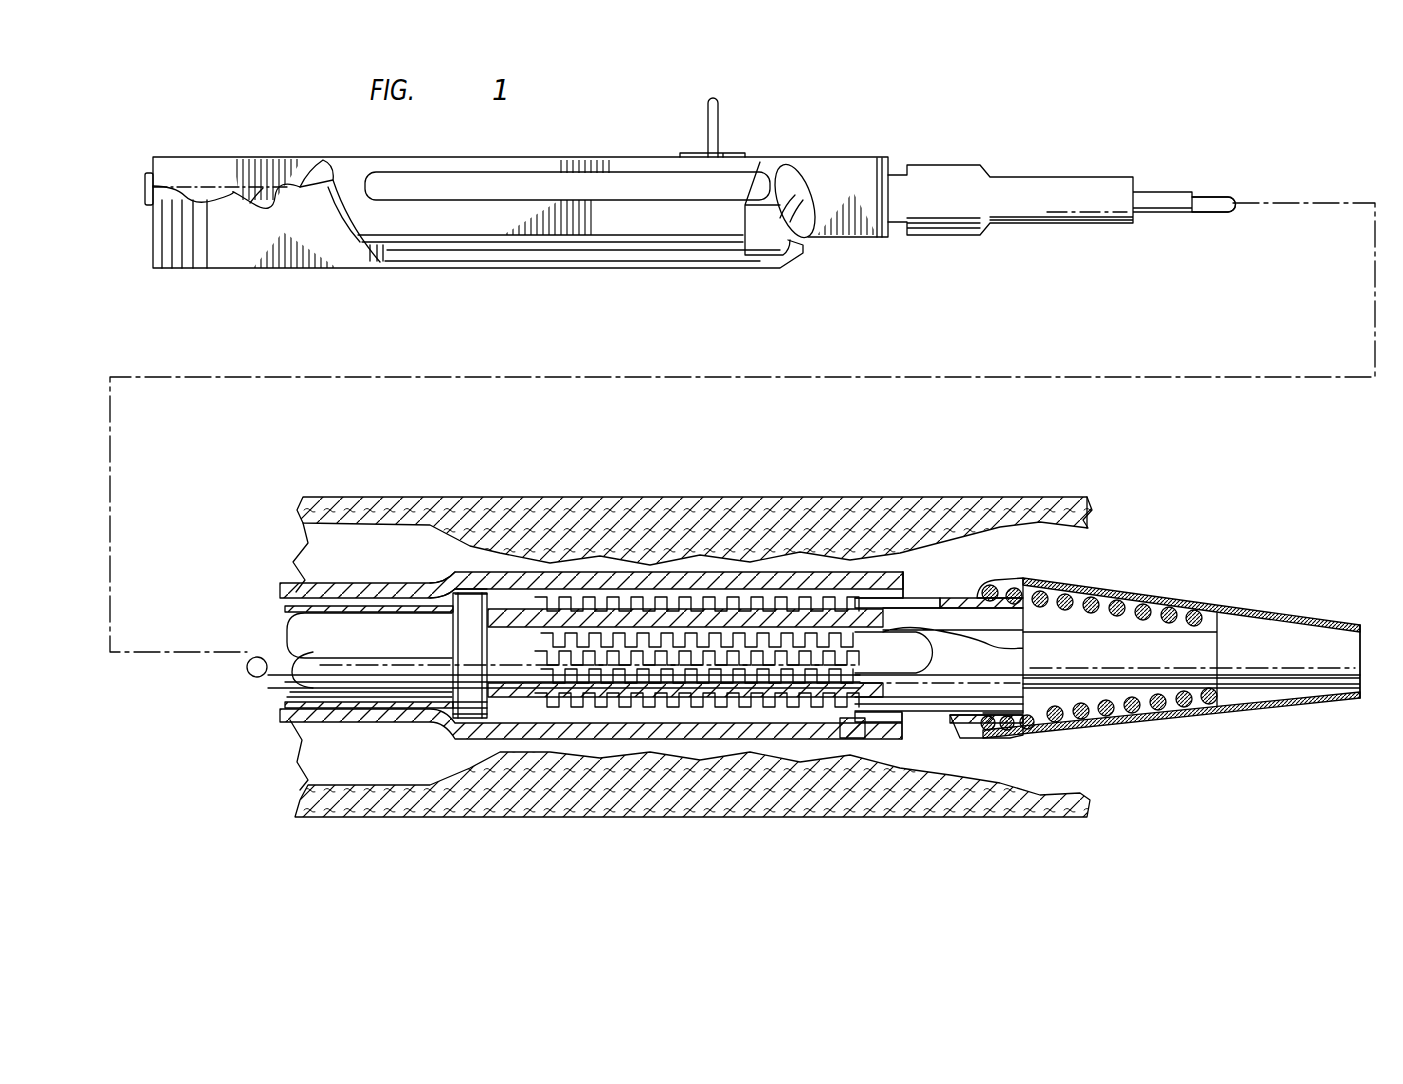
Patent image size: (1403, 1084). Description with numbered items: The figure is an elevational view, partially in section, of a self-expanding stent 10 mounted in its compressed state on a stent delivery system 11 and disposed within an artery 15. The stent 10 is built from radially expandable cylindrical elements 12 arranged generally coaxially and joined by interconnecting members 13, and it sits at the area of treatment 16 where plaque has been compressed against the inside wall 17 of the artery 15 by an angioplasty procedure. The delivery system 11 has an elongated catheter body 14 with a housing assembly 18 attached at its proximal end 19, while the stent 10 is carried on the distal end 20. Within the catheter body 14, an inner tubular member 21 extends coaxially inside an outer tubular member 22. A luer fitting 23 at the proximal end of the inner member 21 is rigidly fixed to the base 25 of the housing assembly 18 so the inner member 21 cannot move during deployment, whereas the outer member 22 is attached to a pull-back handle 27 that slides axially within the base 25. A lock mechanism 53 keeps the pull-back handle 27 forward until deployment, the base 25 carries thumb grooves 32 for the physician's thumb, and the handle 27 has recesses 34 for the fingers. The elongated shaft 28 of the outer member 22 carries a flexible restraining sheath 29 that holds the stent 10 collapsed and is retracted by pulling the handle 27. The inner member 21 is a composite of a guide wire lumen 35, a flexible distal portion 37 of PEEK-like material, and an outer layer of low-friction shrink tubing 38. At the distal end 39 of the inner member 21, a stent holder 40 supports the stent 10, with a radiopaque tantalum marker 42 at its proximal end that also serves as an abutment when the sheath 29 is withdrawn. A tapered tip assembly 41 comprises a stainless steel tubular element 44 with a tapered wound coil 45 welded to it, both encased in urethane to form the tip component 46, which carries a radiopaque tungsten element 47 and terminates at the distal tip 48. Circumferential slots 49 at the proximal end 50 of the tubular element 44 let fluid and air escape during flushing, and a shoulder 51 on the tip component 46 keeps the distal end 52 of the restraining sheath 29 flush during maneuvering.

The self-expanding stent 10 is at (524, 660).
The stent delivery system 11 is at (1030, 143).
The cylindrical elements 12 is at (632, 447).
The interconnecting members 13 is at (565, 707).
The catheter body 14 is at (218, 610).
The artery 15 is at (1037, 500).
The area of treatment 16 is at (513, 491).
The inside wall 17 is at (1090, 583).
The housing assembly 18 is at (575, 147).
The proximal end 19 is at (900, 200).
The distal end 20 is at (937, 742).
The inner tubular member 21 is at (313, 650).
The outer tubular member 22 is at (1215, 188).
The luer fitting 23 is at (143, 185).
The base 25 is at (153, 250).
The pull-back handle 27 is at (773, 173).
The elongated shaft 28 is at (293, 590).
The restraining sheath 29 is at (467, 573).
The thumb grooves 32 is at (262, 205).
The recesses 34 is at (800, 200).
The guide wire lumen 35 is at (247, 681).
The distal portion 37 is at (343, 681).
The shrink tubing 38 is at (402, 605).
The distal end 39 is at (975, 572).
The stent holder 40 is at (848, 598).
The tip assembly 41 is at (1208, 736).
The tantalum marker 42 is at (448, 726).
The tubular element 44 is at (1042, 741).
The tapered wound coil 45 is at (1197, 604).
The tip component 46 is at (1103, 629).
The radiopaque tungsten element 47 is at (1310, 640).
The distal tip 48 is at (1360, 698).
The circumferential slots 49 is at (972, 578).
The proximal end 50 is at (862, 726).
The shoulder 51 is at (980, 741).
The distal end 52 is at (920, 598).
The lock mechanism 53 is at (722, 115).